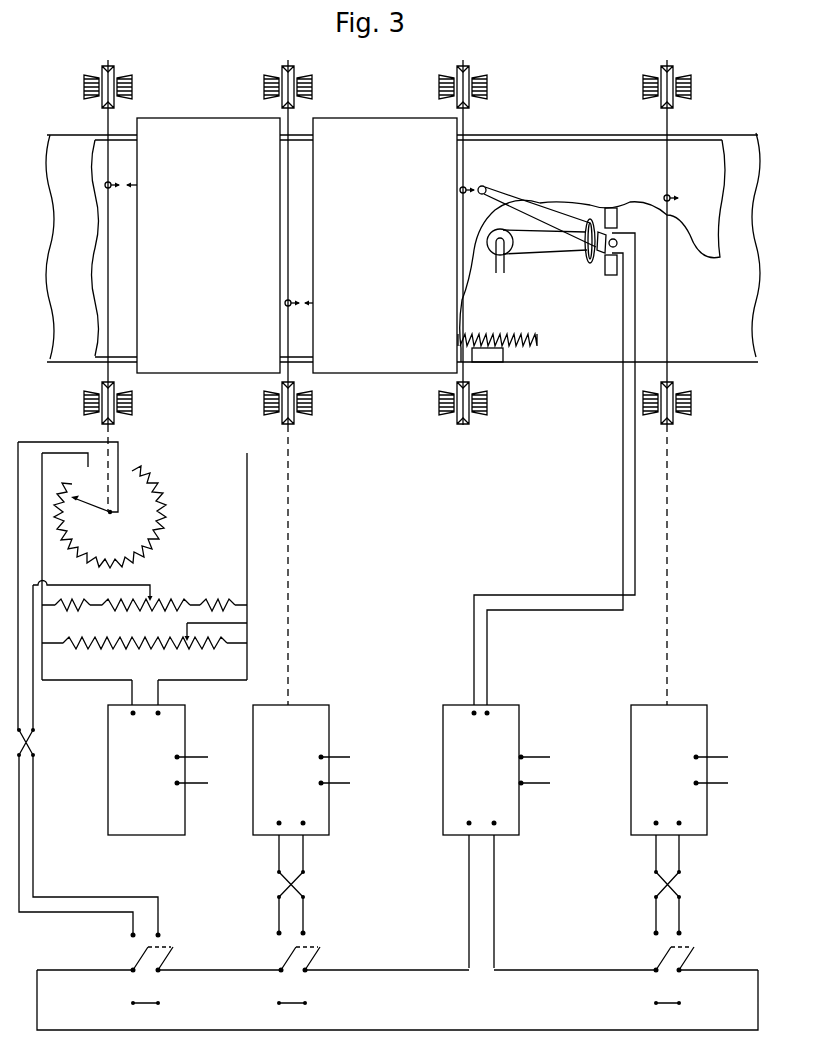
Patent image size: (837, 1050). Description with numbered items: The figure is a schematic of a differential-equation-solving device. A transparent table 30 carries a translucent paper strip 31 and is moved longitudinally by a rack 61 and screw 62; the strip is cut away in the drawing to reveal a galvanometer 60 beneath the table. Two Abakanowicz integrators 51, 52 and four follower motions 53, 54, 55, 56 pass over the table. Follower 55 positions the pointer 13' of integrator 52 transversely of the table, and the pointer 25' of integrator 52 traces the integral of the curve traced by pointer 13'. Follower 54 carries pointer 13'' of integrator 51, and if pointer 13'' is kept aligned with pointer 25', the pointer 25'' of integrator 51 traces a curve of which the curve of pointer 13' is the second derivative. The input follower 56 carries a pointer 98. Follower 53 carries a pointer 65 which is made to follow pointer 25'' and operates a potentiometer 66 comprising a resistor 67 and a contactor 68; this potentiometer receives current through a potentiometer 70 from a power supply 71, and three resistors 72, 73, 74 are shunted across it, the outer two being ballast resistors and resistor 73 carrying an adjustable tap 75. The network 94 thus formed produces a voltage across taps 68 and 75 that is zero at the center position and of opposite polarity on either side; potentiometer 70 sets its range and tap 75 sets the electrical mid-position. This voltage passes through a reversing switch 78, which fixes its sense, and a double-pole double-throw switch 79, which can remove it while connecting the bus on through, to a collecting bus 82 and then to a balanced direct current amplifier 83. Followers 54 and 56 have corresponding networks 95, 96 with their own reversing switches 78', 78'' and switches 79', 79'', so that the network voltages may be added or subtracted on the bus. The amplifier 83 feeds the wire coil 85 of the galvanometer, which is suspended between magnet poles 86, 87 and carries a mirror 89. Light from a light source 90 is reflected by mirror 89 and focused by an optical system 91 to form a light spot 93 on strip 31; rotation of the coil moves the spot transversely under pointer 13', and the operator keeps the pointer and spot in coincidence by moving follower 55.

The pointer 13' is at (476, 174).
The pointer 13'' is at (300, 287).
The pointer 25' is at (303, 325).
The pointer 25'' is at (150, 170).
The transparent table 30 is at (60, 326).
The translucent paper strip 31 is at (111, 281).
The integrator 51 is at (222, 118).
The integrator 52 is at (398, 118).
The follower motion 53 is at (109, 66).
The follower motion 54 is at (287, 66).
The follower motion 55 is at (464, 66).
The input follower 56 is at (666, 66).
The galvanometer 60 is at (588, 222).
The rack 61 is at (483, 352).
The screw 62 is at (523, 336).
The pointer 65 is at (112, 182).
The potentiometer 66 is at (128, 456).
The resistor 67 is at (166, 506).
The contactor 68 is at (83, 507).
The potentiometer 70 is at (175, 649).
The power supply 71 is at (158, 770).
The ballast resistor 72 is at (70, 611).
The resistor 73 is at (148, 611).
The ballast resistor 74 is at (226, 604).
The adjustable tap 75 is at (153, 594).
The reversing switch 78 is at (89, 833).
The reversing switch 78' is at (312, 885).
The reversing switch 78'' is at (689, 885).
The double-pole double-throw switch 79 is at (167, 956).
The switch 79' is at (316, 956).
The switch 79'' is at (694, 956).
The collecting bus 82 is at (427, 1030).
The balanced direct current amplifier 83 is at (539, 600).
The wire coil 85 is at (617, 243).
The magnet pole 86 is at (617, 218).
The magnet pole 87 is at (605, 272).
The mirror 89 is at (600, 253).
The light source 90 is at (504, 256).
The optical system 91 is at (582, 250).
The light spot 93 is at (487, 188).
The network 94 is at (79, 682).
The network 95 is at (281, 786).
The network 96 is at (659, 786).
The pointer 98 is at (671, 196).